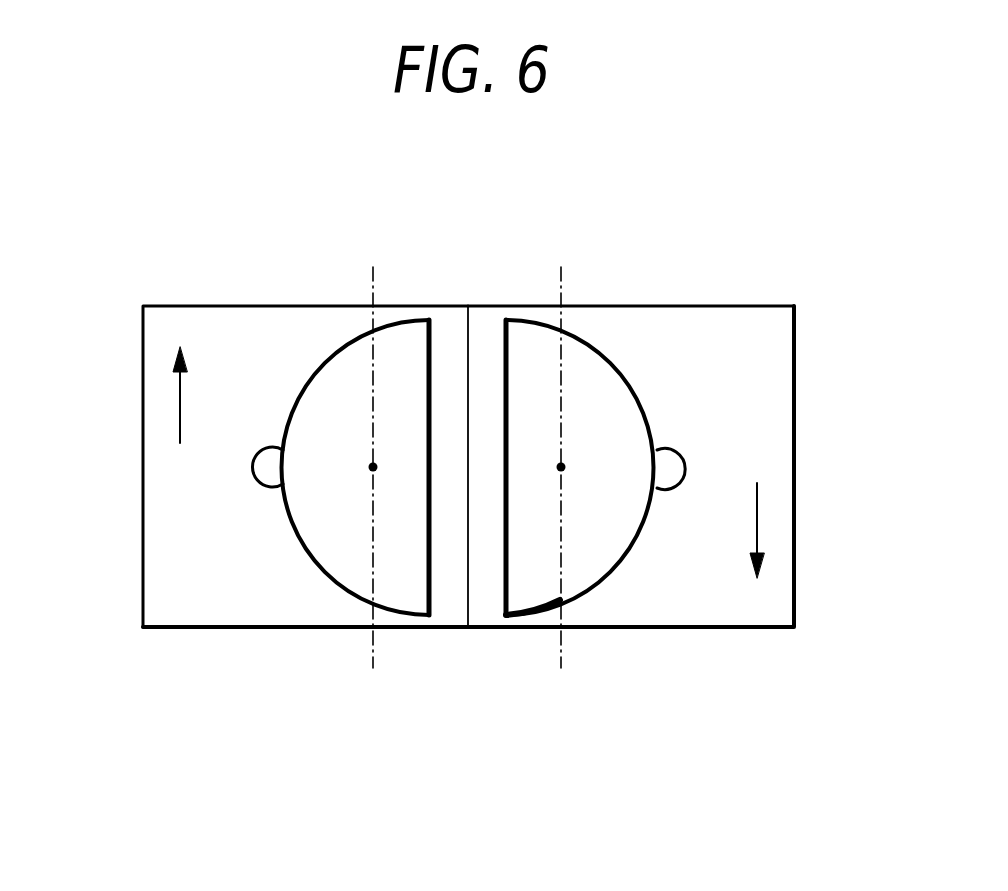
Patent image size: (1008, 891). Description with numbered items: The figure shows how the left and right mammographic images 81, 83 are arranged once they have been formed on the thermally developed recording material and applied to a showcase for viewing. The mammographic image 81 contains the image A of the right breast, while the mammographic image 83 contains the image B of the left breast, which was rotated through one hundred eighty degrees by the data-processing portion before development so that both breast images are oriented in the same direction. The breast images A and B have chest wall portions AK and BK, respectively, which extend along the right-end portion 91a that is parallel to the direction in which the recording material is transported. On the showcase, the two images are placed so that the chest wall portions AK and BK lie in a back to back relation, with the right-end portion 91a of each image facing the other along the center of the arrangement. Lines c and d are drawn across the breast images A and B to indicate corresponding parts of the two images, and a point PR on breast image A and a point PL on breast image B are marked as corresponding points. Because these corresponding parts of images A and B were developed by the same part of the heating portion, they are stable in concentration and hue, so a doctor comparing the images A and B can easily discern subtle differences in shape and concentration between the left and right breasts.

The mammographic image 81 is at (155, 467).
The mammographic image 83 is at (780, 462).
The right-end portion 91a is at (468, 603).
The image of the right breast A is at (335, 368).
The chest wall portion AK is at (432, 358).
The image of the left breast B is at (600, 368).
The chest wall portion BK is at (502, 358).
The center axis c is at (370, 650).
The center axis d is at (565, 650).
The point on the breast image A PR is at (373, 467).
The point on the breast image B PL is at (561, 467).